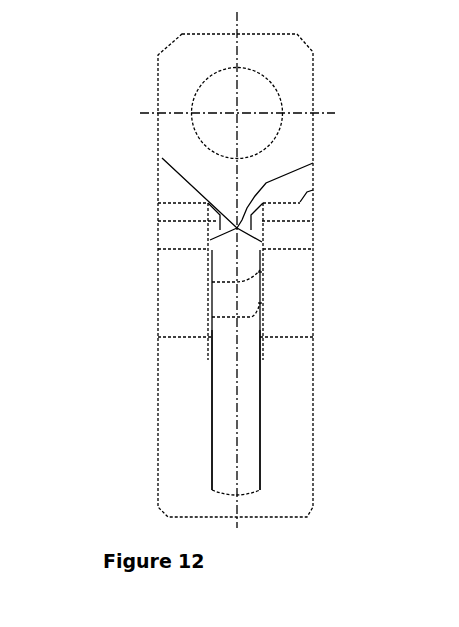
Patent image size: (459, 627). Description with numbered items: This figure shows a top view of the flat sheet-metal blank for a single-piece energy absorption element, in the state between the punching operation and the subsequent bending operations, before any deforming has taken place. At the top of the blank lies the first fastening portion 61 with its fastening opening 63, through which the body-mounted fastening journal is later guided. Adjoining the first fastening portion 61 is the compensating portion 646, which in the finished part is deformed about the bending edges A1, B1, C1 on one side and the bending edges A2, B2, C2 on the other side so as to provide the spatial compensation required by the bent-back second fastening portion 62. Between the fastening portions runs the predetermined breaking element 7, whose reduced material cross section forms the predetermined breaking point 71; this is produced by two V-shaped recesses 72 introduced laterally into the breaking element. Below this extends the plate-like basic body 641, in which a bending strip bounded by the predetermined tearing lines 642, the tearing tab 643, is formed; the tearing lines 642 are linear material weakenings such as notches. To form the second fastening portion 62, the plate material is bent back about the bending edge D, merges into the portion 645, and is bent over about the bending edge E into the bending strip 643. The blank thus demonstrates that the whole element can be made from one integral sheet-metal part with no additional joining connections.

The first fastening portion 61 is at (302, 75).
The fastening opening 63 is at (218, 97).
The predetermined breaking element 7 is at (160, 157).
The predetermined breaking point 71 is at (313, 163).
The V-shaped recesses 72 is at (212, 226).
The second fastening portion 62 is at (222, 275).
The basic body 641 is at (177, 408).
The predetermined tearing lines 642 is at (212, 422).
The tearing tab 643 is at (227, 430).
The bent-back portion 645 is at (226, 300).
The compensating portion 646 is at (177, 255).
The bending edge A1 is at (195, 203).
The bending edge A2 is at (285, 203).
The bending edge B1 is at (190, 250).
The bending edge B2 is at (265, 250).
The bending edge C1 is at (173, 337).
The bending edge C2 is at (303, 337).
The bending edge D is at (260, 272).
The bending edge E is at (260, 303).